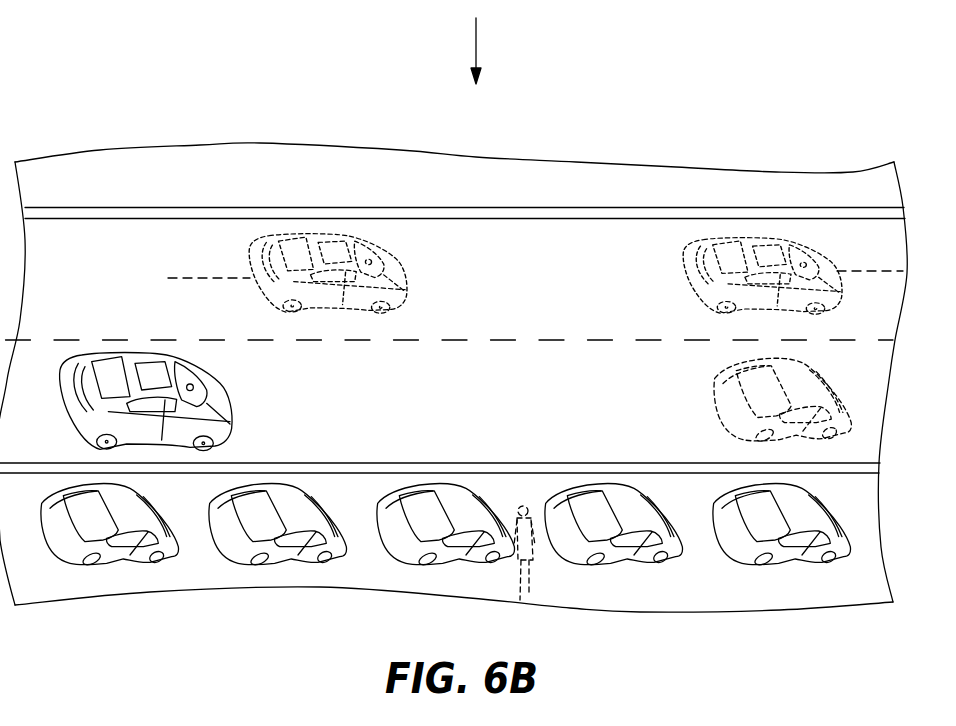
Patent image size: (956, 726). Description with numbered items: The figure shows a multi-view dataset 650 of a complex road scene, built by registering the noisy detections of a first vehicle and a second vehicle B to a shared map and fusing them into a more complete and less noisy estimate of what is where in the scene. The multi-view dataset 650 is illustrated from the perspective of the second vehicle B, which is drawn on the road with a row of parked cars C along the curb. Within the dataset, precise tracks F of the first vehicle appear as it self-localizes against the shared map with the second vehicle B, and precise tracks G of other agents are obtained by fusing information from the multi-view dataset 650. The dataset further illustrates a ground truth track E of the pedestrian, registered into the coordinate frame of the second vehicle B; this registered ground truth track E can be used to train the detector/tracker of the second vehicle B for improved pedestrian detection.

The multi-view dataset 650 is at (105, 105).
The precise tracks of other agents G is at (213, 278).
The precise tracks of the first vehicle F is at (888, 271).
The second vehicle B is at (132, 401).
The parked cars C is at (455, 526).
The ground truth track of the pedestrian E is at (520, 505).